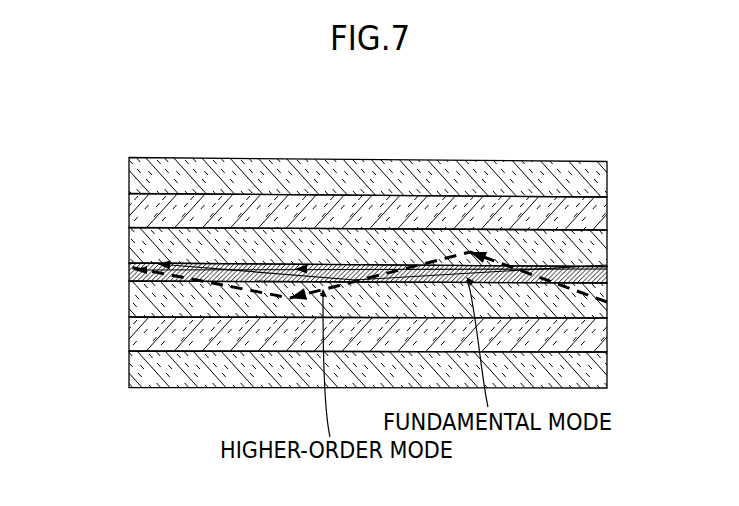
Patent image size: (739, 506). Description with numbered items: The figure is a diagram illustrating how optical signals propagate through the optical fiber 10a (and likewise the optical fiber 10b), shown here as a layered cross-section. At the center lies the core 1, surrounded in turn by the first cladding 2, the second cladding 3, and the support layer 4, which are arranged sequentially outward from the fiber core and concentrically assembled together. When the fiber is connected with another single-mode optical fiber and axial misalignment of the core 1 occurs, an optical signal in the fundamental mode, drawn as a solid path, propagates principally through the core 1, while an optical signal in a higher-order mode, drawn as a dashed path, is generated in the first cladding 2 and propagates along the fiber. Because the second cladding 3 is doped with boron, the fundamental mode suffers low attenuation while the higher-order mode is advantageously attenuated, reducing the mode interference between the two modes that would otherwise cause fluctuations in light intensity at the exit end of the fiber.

The core 1 is at (605, 275).
The first cladding 2 is at (598, 247).
The second cladding 3 is at (598, 213).
The support layer 4 is at (598, 178).
The optical fiber 10a is at (373, 230).
The optical fiber 10b is at (373, 230).